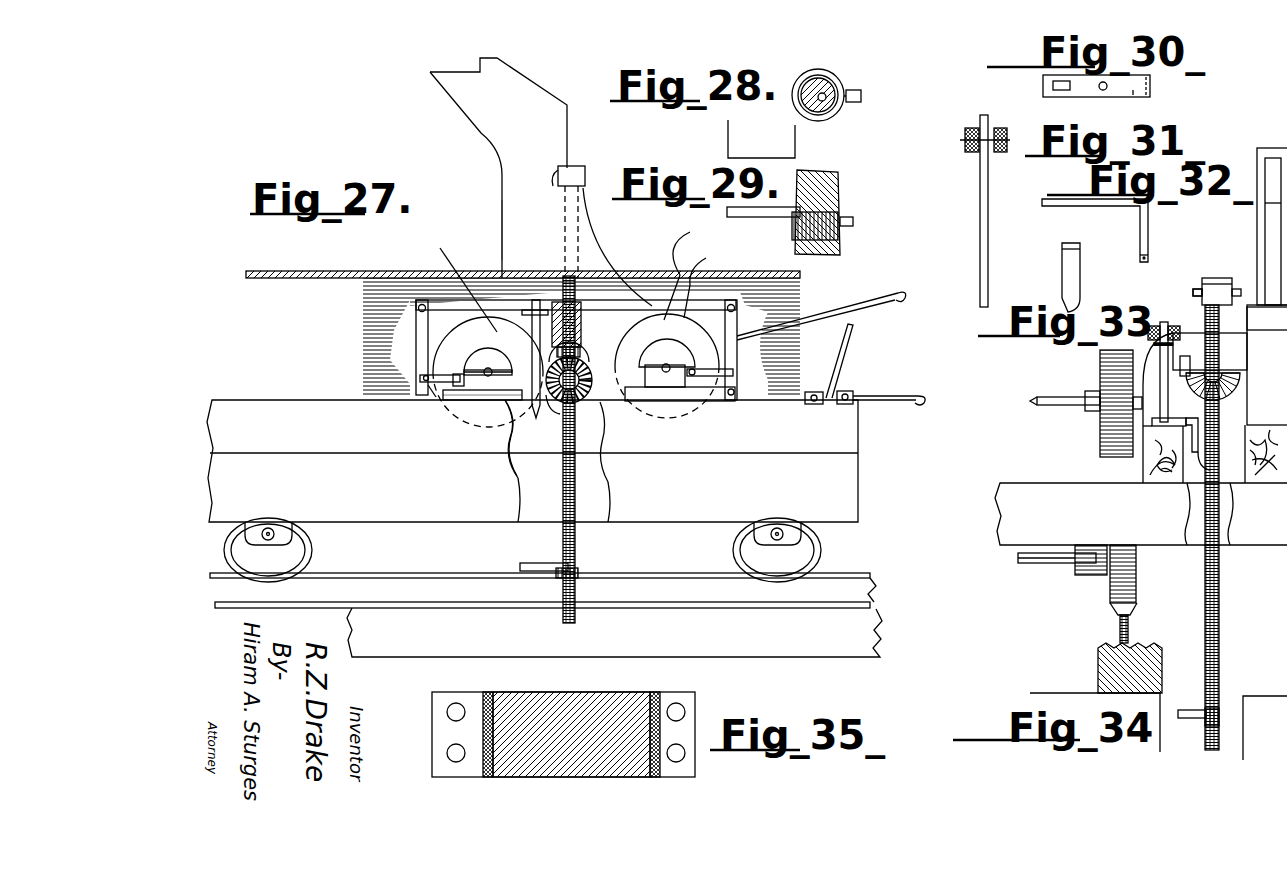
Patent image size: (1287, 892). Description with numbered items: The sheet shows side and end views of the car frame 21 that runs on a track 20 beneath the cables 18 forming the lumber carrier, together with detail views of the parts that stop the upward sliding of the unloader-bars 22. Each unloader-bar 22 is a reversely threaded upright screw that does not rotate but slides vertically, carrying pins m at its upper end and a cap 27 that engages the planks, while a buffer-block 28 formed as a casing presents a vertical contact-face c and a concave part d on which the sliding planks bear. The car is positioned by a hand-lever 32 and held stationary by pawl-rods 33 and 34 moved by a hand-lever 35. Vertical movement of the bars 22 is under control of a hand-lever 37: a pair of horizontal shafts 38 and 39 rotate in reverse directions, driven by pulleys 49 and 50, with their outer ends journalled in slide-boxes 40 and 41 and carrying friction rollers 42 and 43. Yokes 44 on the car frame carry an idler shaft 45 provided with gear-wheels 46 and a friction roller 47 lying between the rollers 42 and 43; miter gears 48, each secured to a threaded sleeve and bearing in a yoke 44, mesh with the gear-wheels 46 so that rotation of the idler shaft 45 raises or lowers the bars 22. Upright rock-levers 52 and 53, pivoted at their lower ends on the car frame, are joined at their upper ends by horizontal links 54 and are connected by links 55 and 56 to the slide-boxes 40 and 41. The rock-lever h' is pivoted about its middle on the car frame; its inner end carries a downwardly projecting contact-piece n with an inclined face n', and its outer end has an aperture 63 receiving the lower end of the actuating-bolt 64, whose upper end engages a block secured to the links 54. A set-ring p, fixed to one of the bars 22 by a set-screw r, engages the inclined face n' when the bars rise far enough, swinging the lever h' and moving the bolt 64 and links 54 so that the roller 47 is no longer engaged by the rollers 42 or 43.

In FIG. 27, the cables 18 is at (300, 272).
In FIG. 27, the track 20 is at (880, 586).
In FIG. 34, the track 20 is at (1118, 615).
In FIG. 27, the car frame 21 is at (860, 482).
In FIG. 33, the car frame 21 is at (1008, 508).
In FIG. 27, the unloader-bars 22 is at (584, 541).
In FIG. 28, the unloader-bars 22 is at (808, 82).
In FIG. 29, the unloader-bars 22 is at (842, 186).
In FIG. 33, the unloader-bars 22 is at (1212, 425).
In FIG. 34, the unloader-bars 22 is at (1222, 622).
In FIG. 27, the cap 27 is at (585, 172).
In FIG. 33, the cap 27 is at (1210, 280).
In FIG. 27, the buffer-blocks 28 is at (520, 176).
In FIG. 27, the hand-lever 32 is at (852, 350).
In FIG. 27, the pawl-rod 33 is at (815, 391).
In FIG. 27, the pawl-rod 34 is at (853, 394).
In FIG. 27, the hand-lever 35 is at (894, 404).
In FIG. 27, the hand-lever 37 is at (883, 308).
In FIG. 27, the horizontal shaft 38 is at (668, 366).
In FIG. 27, the horizontal shaft 39 is at (487, 369).
In FIG. 27, the slide-box 40 is at (672, 390).
In FIG. 27, the slide-box 41 is at (480, 380).
In FIG. 27, the friction roller 42 is at (697, 335).
In FIG. 27, the friction roller 43 is at (466, 369).
In FIG. 27, the yokes 44 is at (590, 304).
In FIG. 33, the yokes 44 is at (1190, 338).
In FIG. 33, the idler shaft 45 is at (1060, 406).
In FIG. 27, the gear-wheels 46 is at (582, 394).
In FIG. 33, the gear-wheels 46 is at (1182, 386).
In FIG. 27, the friction roller 47 is at (616, 343).
In FIG. 33, the friction roller 47 is at (1108, 375).
In FIG. 27, the miter gears 48 is at (593, 374).
In FIG. 33, the miter gears 48 is at (1238, 386).
In FIG. 27, the pulley 49 is at (704, 279).
In FIG. 27, the pulley 50 is at (441, 249).
In FIG. 27, the rock-lever 52 is at (736, 350).
In FIG. 27, the rock-lever 53 is at (418, 345).
In FIG. 27, the links 54 is at (687, 267).
In FIG. 31, the links 54 is at (966, 131).
In FIG. 33, the links 54 is at (1148, 330).
In FIG. 27, the link 55 is at (716, 390).
In FIG. 27, the link 56 is at (463, 387).
In FIG. 30, the aperture 63 is at (1055, 92).
In FIG. 27, the actuating-bolt 64 is at (527, 326).
In FIG. 31, the actuating-bolt 64 is at (983, 203).
In FIG. 33, the actuating-bolt 64 is at (1162, 358).
In FIG. 27, the contact-face c is at (574, 131).
In FIG. 27, the concave part d is at (603, 207).
In FIG. 33, the pins m is at (1186, 288).
In FIG. 27, the contact-piece n is at (539, 363).
In FIG. 32, the contact-piece n is at (1108, 261).
In FIG. 33, the contact-piece n is at (1175, 435).
In FIG. 27, the inclined face n' is at (510, 438).
In FIG. 32, the inclined face n' is at (1086, 278).
In FIG. 33, the inclined face n' is at (1219, 456).
In FIG. 27, the set-ring p is at (556, 574).
In FIG. 28, the set-ring p is at (812, 121).
In FIG. 29, the set-ring p is at (792, 226).
In FIG. 34, the set-ring p is at (1198, 719).
In FIG. 27, the set-screw r is at (585, 571).
In FIG. 28, the set-screw r is at (866, 98).
In FIG. 29, the set-screw r is at (856, 226).
In FIG. 34, the set-screw r is at (1223, 708).
In FIG. 30, the rock-lever h' is at (1153, 104).
In FIG. 32, the rock-lever h' is at (1095, 230).
In FIG. 33, the rock-lever h' is at (1128, 455).